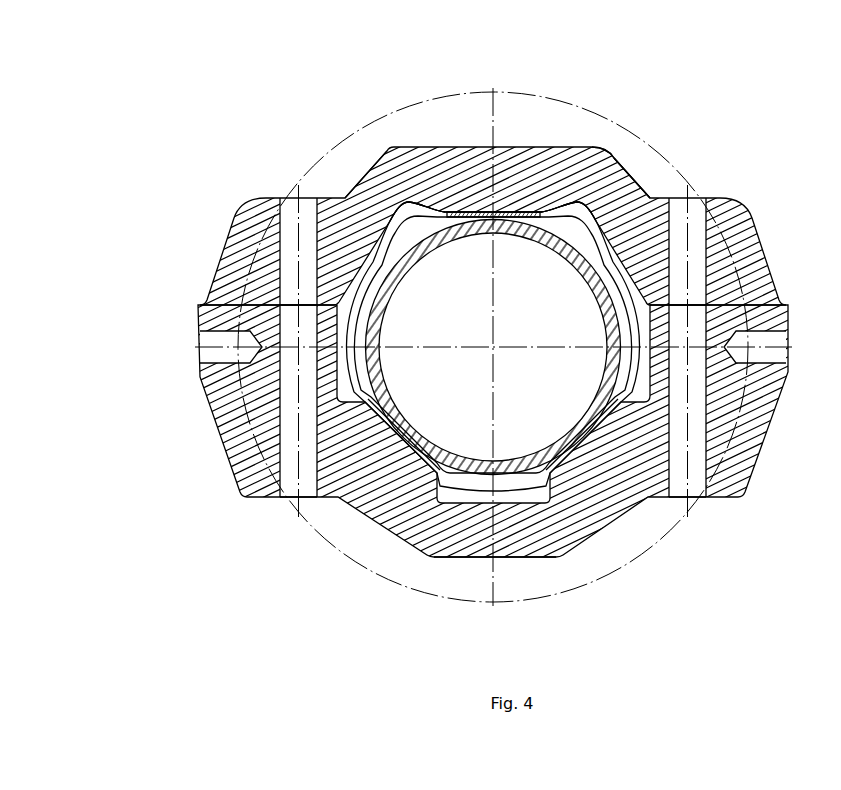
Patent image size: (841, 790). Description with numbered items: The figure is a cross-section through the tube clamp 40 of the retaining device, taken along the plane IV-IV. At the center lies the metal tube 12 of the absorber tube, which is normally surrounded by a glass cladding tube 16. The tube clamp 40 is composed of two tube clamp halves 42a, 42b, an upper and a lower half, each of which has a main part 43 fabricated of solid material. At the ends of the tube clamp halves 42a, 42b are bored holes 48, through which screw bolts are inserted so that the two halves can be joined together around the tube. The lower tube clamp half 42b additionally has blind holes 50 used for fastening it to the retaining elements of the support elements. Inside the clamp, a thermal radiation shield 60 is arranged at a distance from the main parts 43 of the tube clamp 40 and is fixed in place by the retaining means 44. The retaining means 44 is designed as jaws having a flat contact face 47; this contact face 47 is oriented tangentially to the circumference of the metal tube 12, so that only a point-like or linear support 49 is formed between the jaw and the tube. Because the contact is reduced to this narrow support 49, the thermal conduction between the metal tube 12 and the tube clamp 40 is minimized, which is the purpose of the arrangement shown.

The metal tube 12 is at (548, 230).
The glass cladding tube 16 is at (450, 92).
The tube clamp 40 is at (280, 148).
The tube clamp half 42a is at (373, 155).
The tube clamp half 42b is at (420, 556).
The main part 43 is at (440, 147).
The retaining means 44 is at (500, 212).
The contact face 47 is at (468, 212).
The bored holes 48 is at (308, 215).
The point-like or linear support 49 is at (534, 215).
The blind holes 50 is at (220, 355).
The thermal radiation shield 60 is at (613, 150).